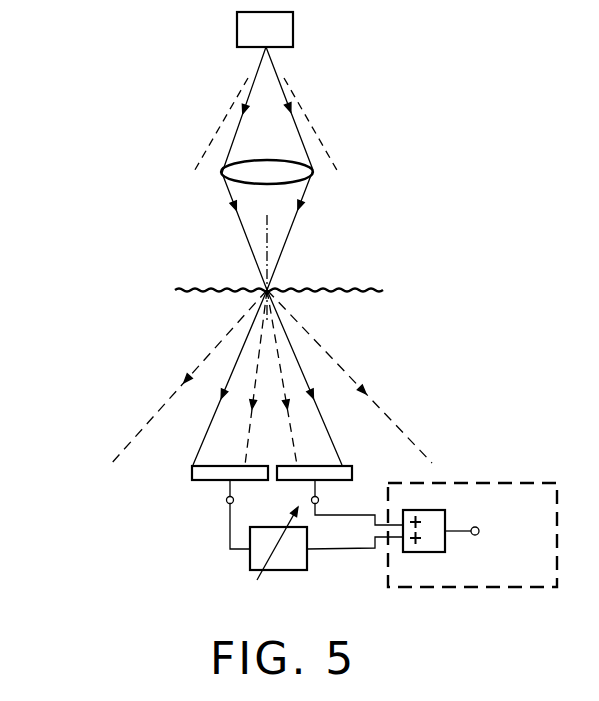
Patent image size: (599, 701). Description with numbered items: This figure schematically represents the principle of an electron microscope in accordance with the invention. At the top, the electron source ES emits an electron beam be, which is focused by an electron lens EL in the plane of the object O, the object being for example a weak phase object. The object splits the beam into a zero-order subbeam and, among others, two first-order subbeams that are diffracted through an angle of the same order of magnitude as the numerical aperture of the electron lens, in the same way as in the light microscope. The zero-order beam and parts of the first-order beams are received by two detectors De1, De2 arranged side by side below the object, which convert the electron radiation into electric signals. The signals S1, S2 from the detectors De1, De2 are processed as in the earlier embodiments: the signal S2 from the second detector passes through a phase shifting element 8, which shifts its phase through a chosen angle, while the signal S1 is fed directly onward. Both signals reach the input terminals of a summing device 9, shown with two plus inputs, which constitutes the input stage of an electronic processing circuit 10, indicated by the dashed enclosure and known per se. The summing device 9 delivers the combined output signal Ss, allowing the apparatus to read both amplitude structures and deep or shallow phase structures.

The electron source ES is at (293, 25).
The electron beam be is at (247, 92).
The electron lens EL is at (303, 175).
The object O is at (370, 289).
The detector De1 is at (352, 472).
The detector De2 is at (192, 470).
The detector signal S1 is at (319, 500).
The detector signal S2 is at (226, 500).
The phase shifting element 8 is at (326, 559).
The summing device 9 is at (428, 552).
The electronic processing circuit 10 is at (487, 587).
The output signal Ss is at (476, 535).